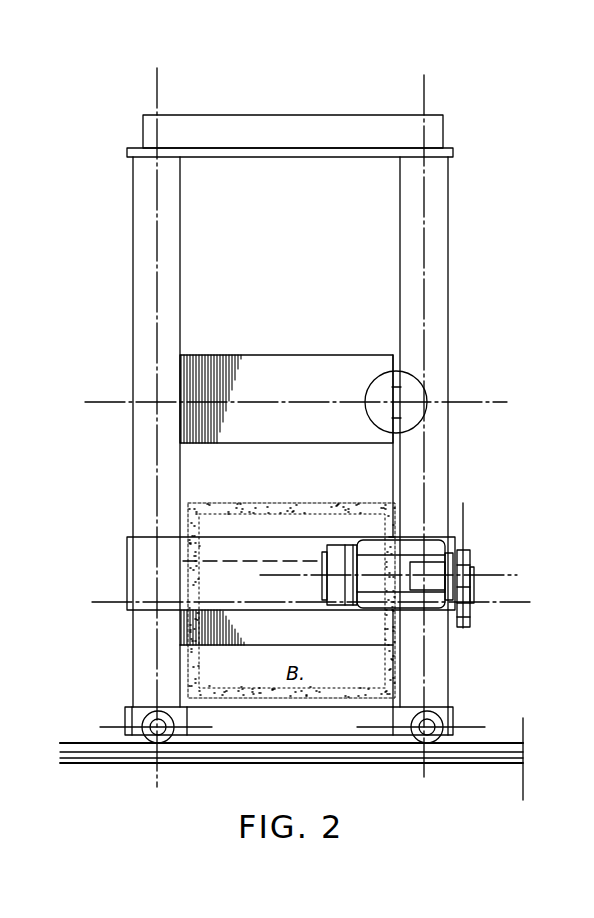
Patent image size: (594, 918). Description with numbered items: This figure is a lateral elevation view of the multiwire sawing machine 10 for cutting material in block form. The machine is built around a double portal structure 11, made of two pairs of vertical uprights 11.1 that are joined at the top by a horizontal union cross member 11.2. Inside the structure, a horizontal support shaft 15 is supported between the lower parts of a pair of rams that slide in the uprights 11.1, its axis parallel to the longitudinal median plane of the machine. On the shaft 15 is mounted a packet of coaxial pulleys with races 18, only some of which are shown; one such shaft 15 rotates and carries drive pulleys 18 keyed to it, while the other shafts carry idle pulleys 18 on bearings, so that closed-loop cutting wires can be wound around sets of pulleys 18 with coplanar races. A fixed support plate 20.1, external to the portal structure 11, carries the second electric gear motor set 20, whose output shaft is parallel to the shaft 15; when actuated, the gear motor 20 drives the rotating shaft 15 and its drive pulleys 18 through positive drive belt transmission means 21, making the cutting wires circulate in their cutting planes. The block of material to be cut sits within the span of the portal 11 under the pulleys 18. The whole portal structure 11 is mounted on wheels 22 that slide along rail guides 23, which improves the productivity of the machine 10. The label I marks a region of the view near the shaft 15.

The multiwire sawing machine 10 is at (455, 97).
The double portal structure 11 is at (116, 185).
The vertical uprights 11.1 is at (142, 262).
The horizontal union cross member 11.2 is at (297, 128).
The support shaft 15 is at (398, 390).
The pulleys with races 18 is at (228, 349).
The second electric gear motor set 20 is at (394, 546).
The fixed support plate 20.1 is at (148, 558).
The positive drive belt transmission means 21 is at (466, 545).
The wheels 22 is at (125, 712).
The rail guides 23 is at (501, 747).
The plane I is at (420, 432).